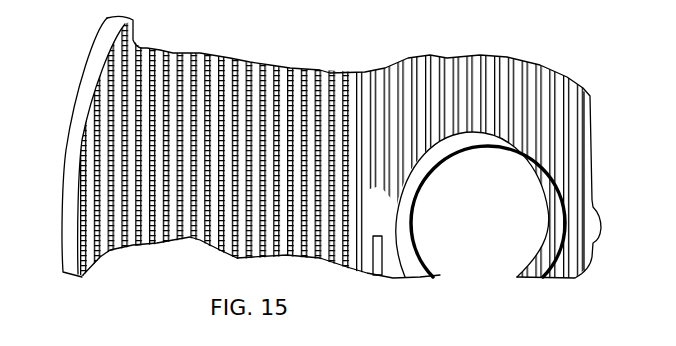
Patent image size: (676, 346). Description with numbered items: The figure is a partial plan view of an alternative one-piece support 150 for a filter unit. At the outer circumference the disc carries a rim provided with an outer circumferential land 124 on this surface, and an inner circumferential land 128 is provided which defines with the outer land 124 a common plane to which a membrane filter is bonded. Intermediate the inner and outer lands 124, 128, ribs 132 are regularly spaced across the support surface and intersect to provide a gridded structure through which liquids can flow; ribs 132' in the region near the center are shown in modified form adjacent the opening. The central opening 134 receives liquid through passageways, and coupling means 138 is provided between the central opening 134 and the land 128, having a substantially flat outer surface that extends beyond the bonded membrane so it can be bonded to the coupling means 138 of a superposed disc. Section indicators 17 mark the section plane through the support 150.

The section line 17 is at (27, 199).
The outer circumferential land 124 is at (63, 185).
The inner circumferential land 128 is at (407, 279).
The ribs 132 is at (338, 173).
The modified ribs 132' is at (338, 173).
The central opening 134 is at (506, 210).
The coupling means 138 is at (417, 258).
The one-piece support 150 is at (337, 66).